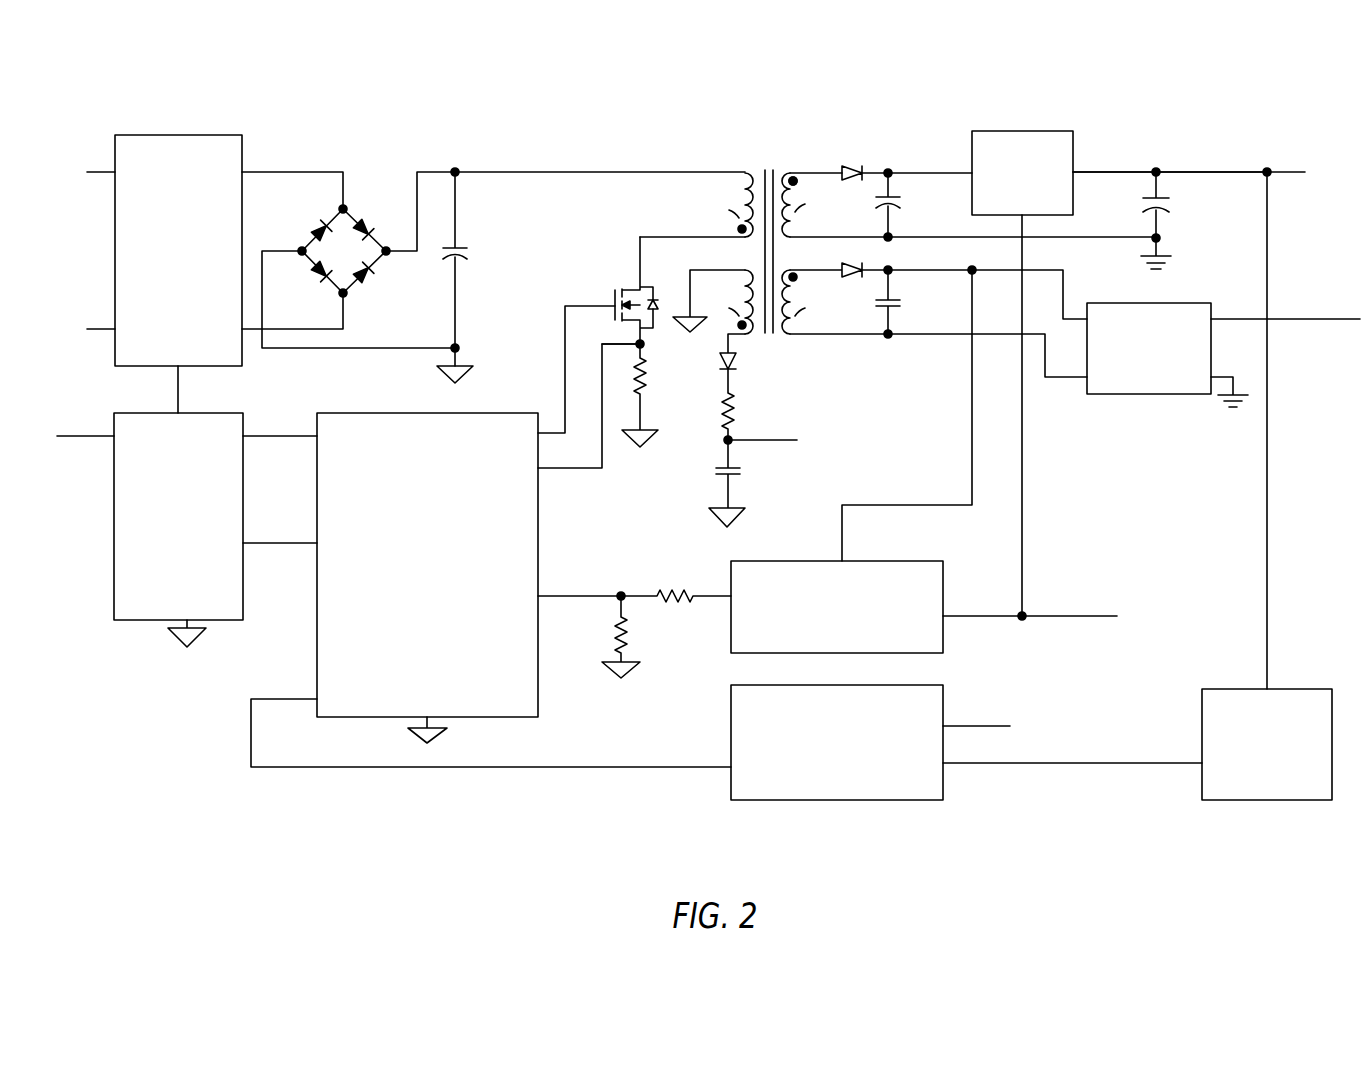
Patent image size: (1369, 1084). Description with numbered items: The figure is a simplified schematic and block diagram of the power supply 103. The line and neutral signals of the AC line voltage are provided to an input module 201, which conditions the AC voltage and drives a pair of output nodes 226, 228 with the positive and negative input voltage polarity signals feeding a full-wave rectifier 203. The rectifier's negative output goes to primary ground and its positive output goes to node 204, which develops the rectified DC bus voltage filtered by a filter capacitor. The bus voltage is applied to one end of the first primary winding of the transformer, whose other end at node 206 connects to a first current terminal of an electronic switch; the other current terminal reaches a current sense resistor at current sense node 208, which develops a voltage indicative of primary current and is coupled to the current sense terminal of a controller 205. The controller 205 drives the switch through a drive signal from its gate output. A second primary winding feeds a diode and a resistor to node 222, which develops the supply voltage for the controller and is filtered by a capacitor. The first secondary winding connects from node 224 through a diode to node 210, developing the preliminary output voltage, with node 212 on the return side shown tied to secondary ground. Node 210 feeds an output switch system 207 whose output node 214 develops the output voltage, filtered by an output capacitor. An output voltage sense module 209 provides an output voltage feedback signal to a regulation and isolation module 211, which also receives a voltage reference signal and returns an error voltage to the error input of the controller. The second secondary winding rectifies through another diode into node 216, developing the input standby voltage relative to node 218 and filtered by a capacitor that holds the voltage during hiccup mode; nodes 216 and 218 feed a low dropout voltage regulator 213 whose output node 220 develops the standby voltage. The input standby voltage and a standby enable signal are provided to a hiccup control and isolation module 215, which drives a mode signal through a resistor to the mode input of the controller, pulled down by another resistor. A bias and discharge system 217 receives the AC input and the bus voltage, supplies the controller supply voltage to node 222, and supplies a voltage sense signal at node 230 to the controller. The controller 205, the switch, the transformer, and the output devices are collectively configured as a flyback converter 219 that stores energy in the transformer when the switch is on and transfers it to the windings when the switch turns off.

The power supply 103 is at (708, 444).
The input module 201 is at (164, 274).
The full-wave rectifier 203 is at (358, 260).
The node 204 is at (458, 170).
The controller 205 is at (427, 580).
The node 206 is at (674, 236).
The output switch system 207 is at (1022, 173).
The current sense node 208 is at (638, 344).
The output voltage sense module 209 is at (1267, 744).
The node 210 is at (887, 171).
The regulation and isolation module 211 is at (837, 742).
The node 212 is at (884, 236).
The low dropout voltage regulator 213 is at (1168, 367).
The output node 214 is at (1170, 161).
The hiccup control and isolation module 215 is at (837, 607).
The node 216 is at (891, 272).
The bias and discharge system 217 is at (150, 537).
The node 218 is at (884, 338).
The flyback converter 219 is at (592, 226).
The node 220 is at (1284, 321).
The node 222 is at (260, 441).
The node 224 is at (834, 173).
The node 226 is at (346, 172).
The node 228 is at (346, 329).
The node 230 is at (260, 548).